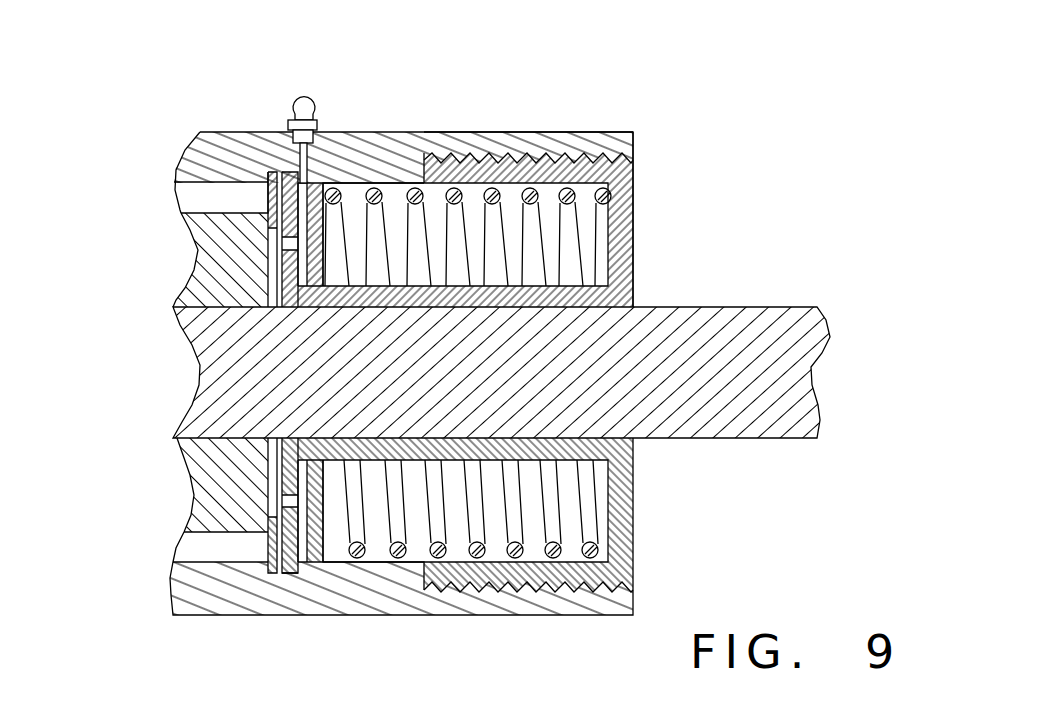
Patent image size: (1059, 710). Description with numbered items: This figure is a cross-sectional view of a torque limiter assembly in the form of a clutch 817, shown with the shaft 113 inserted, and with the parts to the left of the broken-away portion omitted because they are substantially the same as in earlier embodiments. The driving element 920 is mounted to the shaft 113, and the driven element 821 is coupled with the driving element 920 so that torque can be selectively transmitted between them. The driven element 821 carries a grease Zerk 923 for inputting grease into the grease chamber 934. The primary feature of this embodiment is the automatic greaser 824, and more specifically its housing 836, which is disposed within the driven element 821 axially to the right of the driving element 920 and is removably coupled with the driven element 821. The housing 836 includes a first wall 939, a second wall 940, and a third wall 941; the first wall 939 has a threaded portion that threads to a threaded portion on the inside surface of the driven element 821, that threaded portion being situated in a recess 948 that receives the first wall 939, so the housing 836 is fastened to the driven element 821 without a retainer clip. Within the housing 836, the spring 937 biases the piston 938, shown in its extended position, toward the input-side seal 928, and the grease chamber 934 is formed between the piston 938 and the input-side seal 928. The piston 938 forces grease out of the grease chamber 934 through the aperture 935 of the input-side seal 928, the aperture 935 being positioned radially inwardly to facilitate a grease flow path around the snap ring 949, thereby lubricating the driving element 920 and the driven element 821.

The clutch 817 is at (147, 157).
The automatic greaser 824 is at (700, 130).
The shaft 113 is at (778, 322).
The driving element 920 is at (210, 260).
The grease Zerk 923 is at (300, 108).
The piston 938 is at (323, 241).
The recess 948 is at (437, 160).
The first wall 939 is at (548, 160).
The snap ring 949 is at (268, 200).
The second wall 940 is at (625, 205).
The third wall 941 is at (552, 287).
The spring 937 is at (585, 503).
The input-side seal 928 is at (283, 478).
The aperture 935 is at (283, 502).
The grease chamber 934 is at (310, 558).
The driven element 821 is at (368, 600).
The housing 836 is at (538, 542).